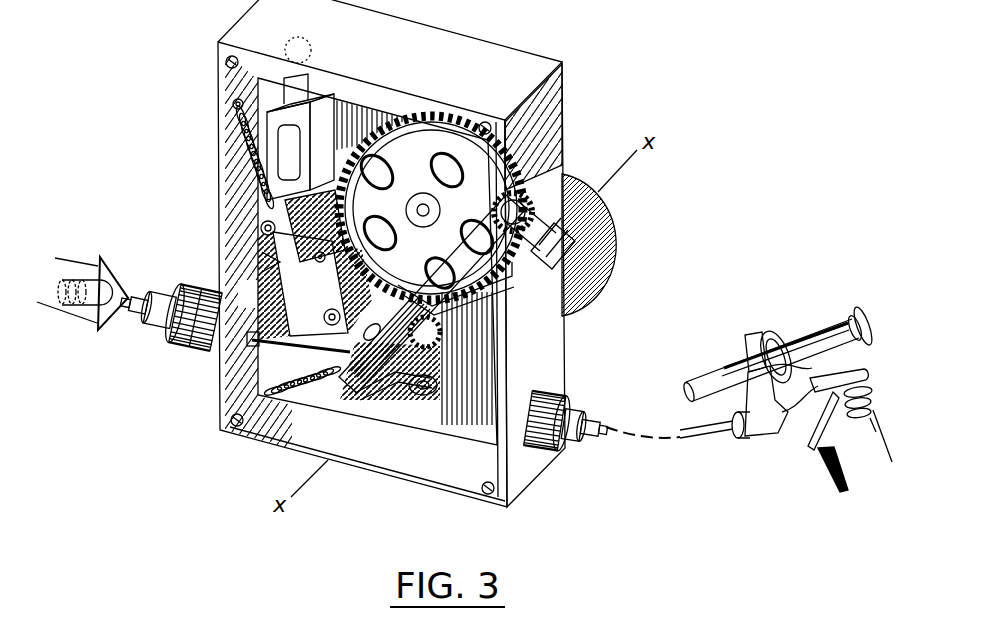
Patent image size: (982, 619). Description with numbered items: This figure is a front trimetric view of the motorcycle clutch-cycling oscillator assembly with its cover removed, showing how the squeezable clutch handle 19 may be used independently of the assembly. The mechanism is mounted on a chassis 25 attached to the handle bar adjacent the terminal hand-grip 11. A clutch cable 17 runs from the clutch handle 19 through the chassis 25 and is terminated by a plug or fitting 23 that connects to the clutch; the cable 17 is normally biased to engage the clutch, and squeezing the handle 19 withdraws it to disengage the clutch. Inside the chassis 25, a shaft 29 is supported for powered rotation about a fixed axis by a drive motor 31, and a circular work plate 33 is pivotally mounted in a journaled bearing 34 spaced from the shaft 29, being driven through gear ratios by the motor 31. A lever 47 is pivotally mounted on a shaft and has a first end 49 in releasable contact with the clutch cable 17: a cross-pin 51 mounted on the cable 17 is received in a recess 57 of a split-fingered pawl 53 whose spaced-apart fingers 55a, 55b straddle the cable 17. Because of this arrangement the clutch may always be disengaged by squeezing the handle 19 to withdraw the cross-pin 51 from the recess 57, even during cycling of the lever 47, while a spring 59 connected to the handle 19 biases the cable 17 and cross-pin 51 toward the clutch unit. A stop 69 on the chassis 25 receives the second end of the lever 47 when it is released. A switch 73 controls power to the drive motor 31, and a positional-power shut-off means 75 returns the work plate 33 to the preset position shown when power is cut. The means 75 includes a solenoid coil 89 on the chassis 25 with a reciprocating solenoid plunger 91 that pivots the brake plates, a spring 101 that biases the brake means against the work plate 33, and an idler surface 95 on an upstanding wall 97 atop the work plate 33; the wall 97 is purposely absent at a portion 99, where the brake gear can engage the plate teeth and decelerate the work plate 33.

The hand-grip 11 is at (803, 336).
The clutch cable 17 is at (128, 304).
The clutch-engaging/disengaging handle 19 is at (838, 397).
The plug or fitting 23 is at (90, 280).
The chassis 25 is at (562, 82).
The shaft 29 is at (432, 402).
The drive motor 31 is at (620, 240).
The work plate 33 is at (427, 207).
The journaled bearing 34 is at (415, 155).
The lever 47 is at (507, 163).
The first end 49 is at (258, 250).
The cross-pin 51 is at (433, 400).
The split-fingered pawl 53 is at (357, 392).
The finger 55a is at (387, 400).
The finger 55b is at (388, 402).
The recess 57 is at (305, 392).
The spring 59 is at (765, 433).
The stop 69 is at (530, 197).
The switch 73 is at (750, 344).
The positional-power shut-off means 75 is at (270, 262).
The solenoid coil 89 is at (233, 104).
The solenoid plunger 91 is at (238, 212).
The idler surface 95 is at (408, 135).
The upstanding wall 97 is at (363, 84).
The absent portion 99 is at (427, 220).
The spring 101 is at (228, 146).